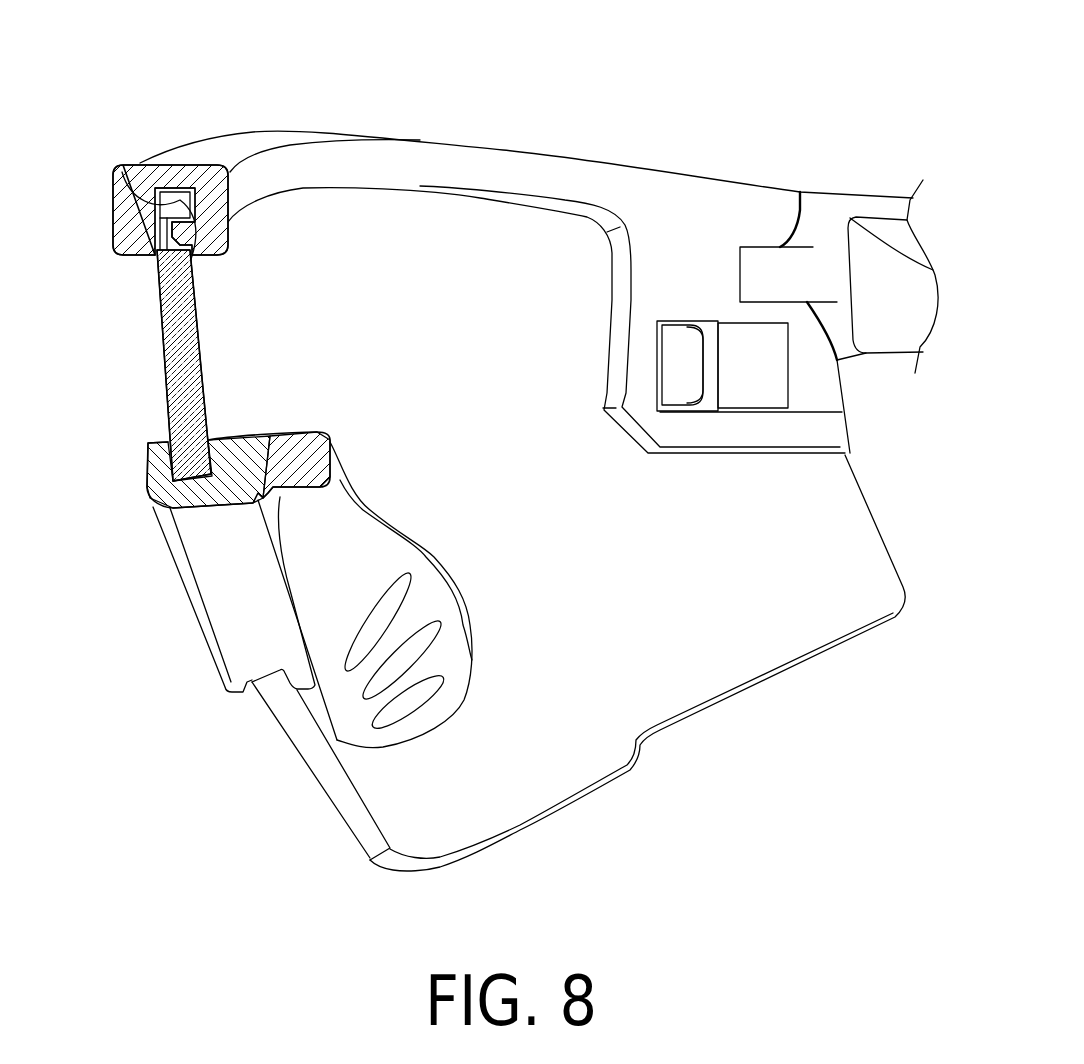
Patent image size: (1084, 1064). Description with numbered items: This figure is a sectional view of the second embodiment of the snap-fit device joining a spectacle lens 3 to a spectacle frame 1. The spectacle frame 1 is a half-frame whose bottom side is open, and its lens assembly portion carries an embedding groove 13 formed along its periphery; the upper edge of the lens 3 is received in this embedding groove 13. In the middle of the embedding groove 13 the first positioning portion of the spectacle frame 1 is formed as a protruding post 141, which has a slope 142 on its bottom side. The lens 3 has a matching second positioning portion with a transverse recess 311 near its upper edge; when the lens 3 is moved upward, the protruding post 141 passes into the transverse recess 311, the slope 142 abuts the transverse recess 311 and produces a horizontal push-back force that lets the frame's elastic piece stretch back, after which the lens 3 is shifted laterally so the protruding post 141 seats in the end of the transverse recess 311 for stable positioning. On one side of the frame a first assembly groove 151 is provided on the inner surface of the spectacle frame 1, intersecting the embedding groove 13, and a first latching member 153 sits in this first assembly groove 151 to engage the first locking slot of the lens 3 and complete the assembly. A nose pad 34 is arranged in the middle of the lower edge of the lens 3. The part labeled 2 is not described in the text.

The spectacle frame 1 is at (458, 165).
The hinge end piece 2 is at (853, 207).
The embedding groove 13 is at (122, 165).
The protruding post 141 is at (227, 230).
The slope 142 is at (186, 276).
The transverse recess 311 is at (158, 283).
The lens 3 is at (167, 377).
The nose pad 34 is at (232, 642).
The first assembly groove 151 is at (813, 400).
The first latching member 153 is at (747, 393).